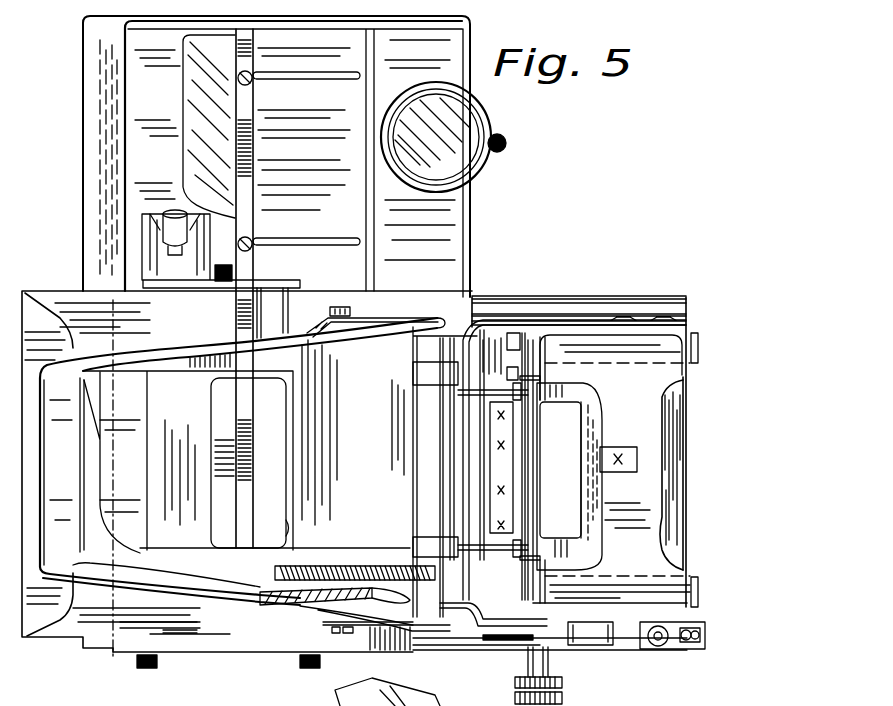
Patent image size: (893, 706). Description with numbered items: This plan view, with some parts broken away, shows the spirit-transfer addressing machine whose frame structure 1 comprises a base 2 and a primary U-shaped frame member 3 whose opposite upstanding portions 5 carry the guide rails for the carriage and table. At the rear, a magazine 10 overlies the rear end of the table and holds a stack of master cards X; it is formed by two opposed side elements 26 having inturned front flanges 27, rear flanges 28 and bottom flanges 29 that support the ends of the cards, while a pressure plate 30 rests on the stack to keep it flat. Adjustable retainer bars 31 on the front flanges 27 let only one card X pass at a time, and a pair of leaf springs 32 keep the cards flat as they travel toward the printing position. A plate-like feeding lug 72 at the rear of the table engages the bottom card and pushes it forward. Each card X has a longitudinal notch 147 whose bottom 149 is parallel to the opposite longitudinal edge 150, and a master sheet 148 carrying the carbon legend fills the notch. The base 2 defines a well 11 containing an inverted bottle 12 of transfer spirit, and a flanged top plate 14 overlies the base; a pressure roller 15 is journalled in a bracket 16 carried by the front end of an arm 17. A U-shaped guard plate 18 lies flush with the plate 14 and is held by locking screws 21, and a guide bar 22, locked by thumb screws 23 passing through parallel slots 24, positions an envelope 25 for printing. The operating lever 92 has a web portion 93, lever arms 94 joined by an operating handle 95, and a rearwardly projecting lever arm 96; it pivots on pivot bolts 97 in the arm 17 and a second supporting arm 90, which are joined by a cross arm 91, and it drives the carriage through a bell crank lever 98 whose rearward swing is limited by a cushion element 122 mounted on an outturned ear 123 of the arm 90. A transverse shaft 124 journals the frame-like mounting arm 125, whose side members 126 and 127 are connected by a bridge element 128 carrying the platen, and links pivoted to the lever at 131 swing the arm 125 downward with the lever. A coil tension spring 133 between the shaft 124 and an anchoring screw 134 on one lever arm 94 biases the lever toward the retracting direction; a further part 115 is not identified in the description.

The frame structure 1 is at (481, 235).
The base 2 is at (422, 55).
The primary U-shaped frame member 3 is at (562, 297).
The upstanding portions 5 is at (593, 297).
The magazine 10 is at (702, 381).
The well 11 is at (482, 112).
The inverted bottle 12 is at (440, 135).
The flanged plate 14 is at (187, 126).
The pressure roller 15 is at (160, 240).
The bracket 16 is at (143, 264).
The arm 17 is at (284, 314).
The guard plate 18 is at (266, 647).
The locking screws 21 is at (145, 667).
The guide bar 22 is at (250, 174).
The thumb screws 23 is at (237, 81).
The slots 24 is at (300, 80).
The envelope 25 is at (62, 297).
The side elements 26 is at (640, 320).
The front flanges 27 is at (536, 368).
The rear flanges 28 is at (700, 346).
The bottom flanges 29 is at (640, 355).
The pressure plate 30 is at (636, 420).
The retainer bars 31 is at (528, 412).
The leaf springs 32 is at (425, 396).
The feeding lug 72 is at (508, 470).
The second supporting arm 90 is at (467, 605).
The cross arm 91 is at (468, 503).
The operating lever 92 is at (222, 606).
The web portion 93 is at (362, 466).
The lever arms 94 is at (172, 350).
The operating handle 95 is at (64, 471).
The lever arm 96 is at (482, 630).
The pivot bolts 97 is at (342, 306).
The bell crank lever 98 is at (585, 654).
The knob 115 is at (587, 699).
The bumper 122 is at (662, 642).
The outturned ear 123 is at (702, 642).
The transverse shaft 124 is at (440, 476).
The mounting arm 125 is at (142, 467).
The side member 126 is at (226, 383).
The side member 127 is at (283, 528).
The bridge element 128 is at (192, 530).
The pivotal connection 131 is at (313, 699).
The coil tension spring 133 is at (350, 564).
The anchoring screw 134 is at (280, 612).
The notch 147 is at (562, 404).
The master sheet 148 is at (560, 470).
The bottom of notch 149 is at (580, 433).
The longitudinal edge 150 is at (690, 505).
The master card X is at (673, 462).